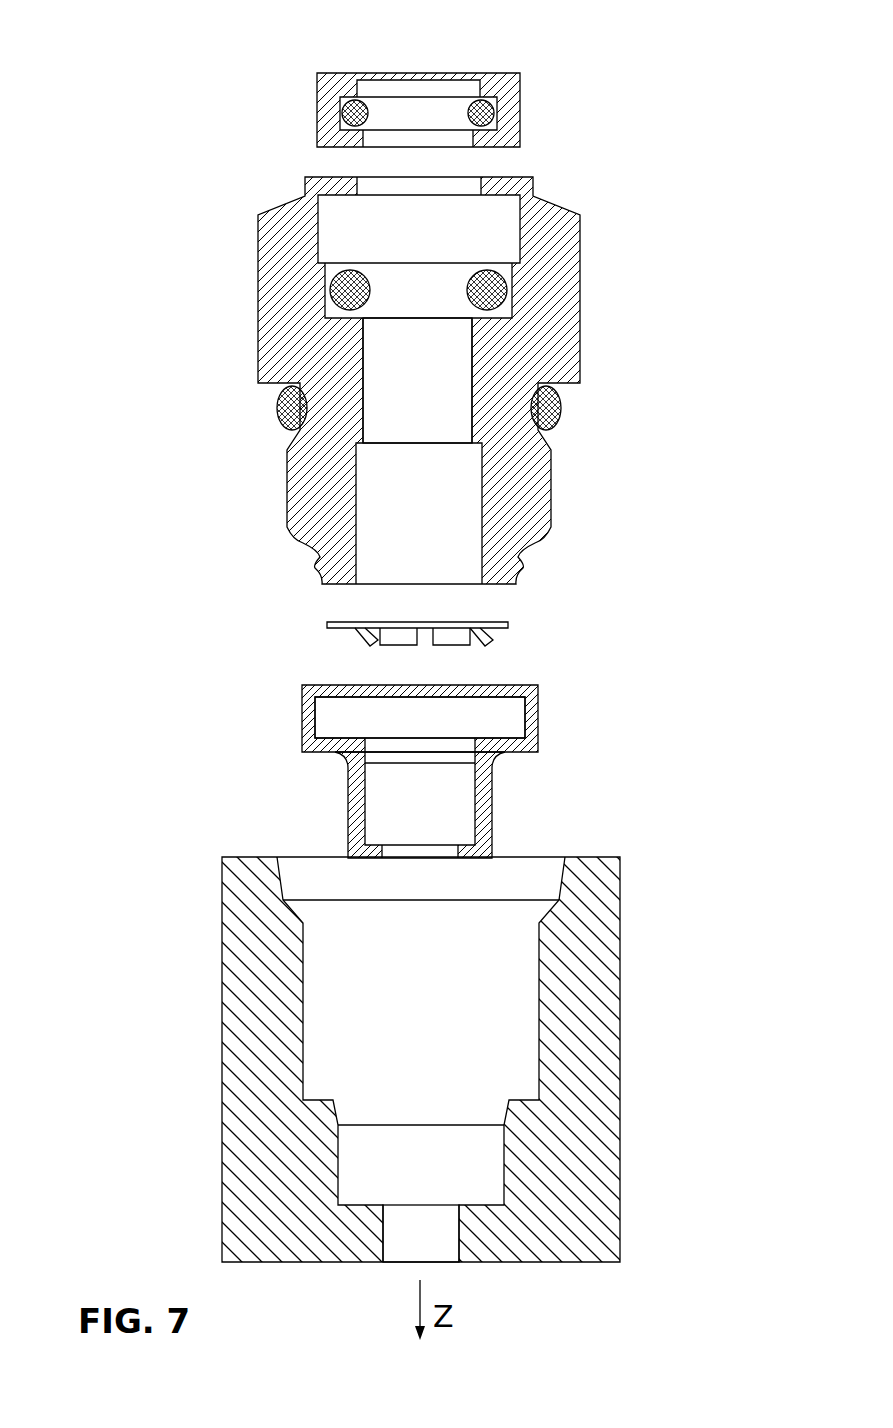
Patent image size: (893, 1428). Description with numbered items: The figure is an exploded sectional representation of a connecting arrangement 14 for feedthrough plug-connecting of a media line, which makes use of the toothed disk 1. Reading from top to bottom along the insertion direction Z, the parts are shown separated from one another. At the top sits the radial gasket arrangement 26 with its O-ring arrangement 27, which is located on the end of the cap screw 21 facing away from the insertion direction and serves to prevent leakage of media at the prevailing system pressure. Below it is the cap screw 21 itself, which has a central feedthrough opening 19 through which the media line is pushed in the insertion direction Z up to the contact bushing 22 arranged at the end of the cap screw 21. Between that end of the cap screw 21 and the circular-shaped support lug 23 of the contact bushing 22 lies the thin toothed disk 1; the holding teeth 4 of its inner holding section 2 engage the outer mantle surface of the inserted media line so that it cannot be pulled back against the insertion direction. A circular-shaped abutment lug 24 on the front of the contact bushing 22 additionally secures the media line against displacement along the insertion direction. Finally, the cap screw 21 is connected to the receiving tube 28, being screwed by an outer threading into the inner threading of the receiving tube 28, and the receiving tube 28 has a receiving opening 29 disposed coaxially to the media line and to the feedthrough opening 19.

The toothed disk 1 is at (490, 641).
The inner holding section 2 is at (445, 642).
The holding teeth 4 is at (458, 632).
The connecting arrangement 14 is at (556, 158).
The feedthrough opening 19 is at (437, 380).
The cap screw 21 is at (546, 251).
The contact bushing 22 is at (538, 713).
The support lug 23 is at (327, 735).
The abutment lug 24 is at (470, 845).
The radial gasket arrangement 26 is at (525, 82).
The O-ring arrangement 27 is at (341, 287).
The receiving tube 28 is at (264, 972).
The receiving opening 29 is at (407, 1247).